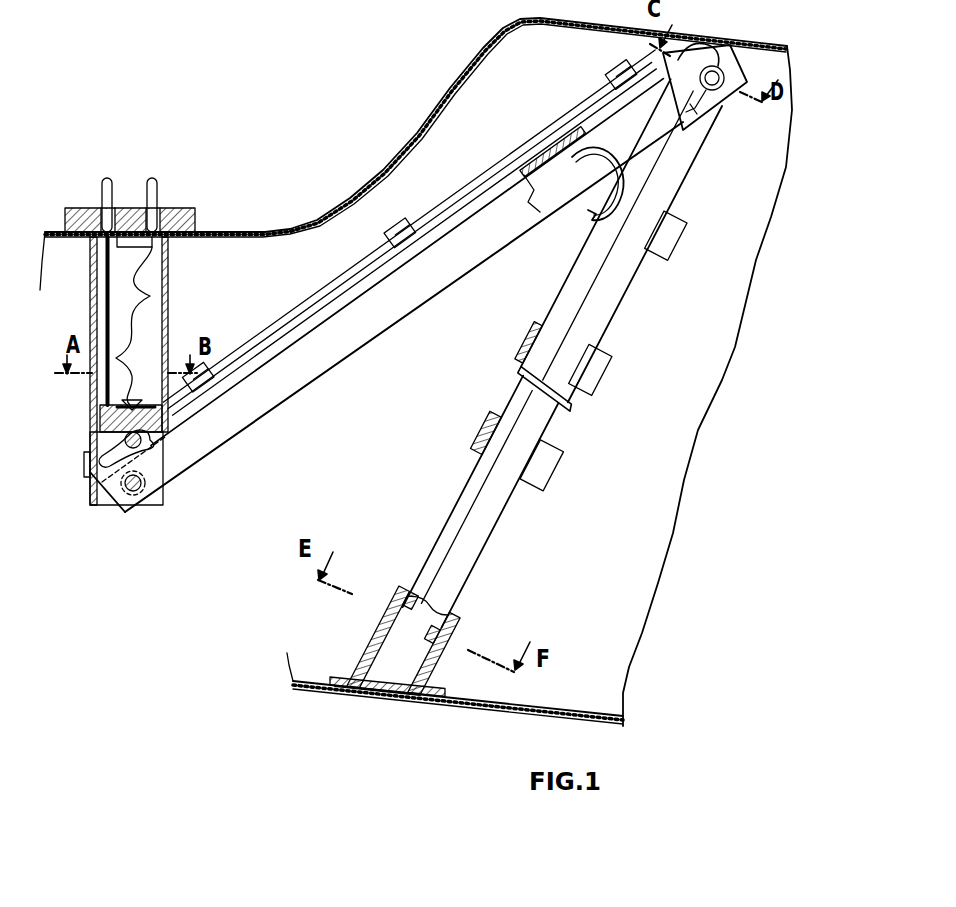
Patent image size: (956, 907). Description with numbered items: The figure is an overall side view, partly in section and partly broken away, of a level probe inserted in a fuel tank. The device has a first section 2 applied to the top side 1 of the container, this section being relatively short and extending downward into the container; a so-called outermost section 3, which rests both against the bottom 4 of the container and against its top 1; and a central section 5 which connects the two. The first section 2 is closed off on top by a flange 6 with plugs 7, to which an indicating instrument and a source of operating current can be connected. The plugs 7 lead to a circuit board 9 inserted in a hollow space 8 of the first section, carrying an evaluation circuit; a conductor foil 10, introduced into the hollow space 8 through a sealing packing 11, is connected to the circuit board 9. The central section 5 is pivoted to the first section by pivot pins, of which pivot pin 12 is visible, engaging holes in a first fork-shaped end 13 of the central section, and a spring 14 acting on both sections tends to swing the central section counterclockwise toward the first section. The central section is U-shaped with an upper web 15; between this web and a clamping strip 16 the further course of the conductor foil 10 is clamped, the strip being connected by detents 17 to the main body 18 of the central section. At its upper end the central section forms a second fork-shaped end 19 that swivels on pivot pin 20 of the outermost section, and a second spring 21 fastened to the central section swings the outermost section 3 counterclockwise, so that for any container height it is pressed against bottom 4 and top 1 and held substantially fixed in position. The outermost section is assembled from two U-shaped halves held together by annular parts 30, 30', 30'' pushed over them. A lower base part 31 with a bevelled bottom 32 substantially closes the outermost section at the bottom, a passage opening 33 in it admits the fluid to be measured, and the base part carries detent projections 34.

The top side 1 is at (332, 212).
The first section 2 is at (91, 274).
The outermost section 3 is at (650, 264).
The bottom 4 is at (505, 717).
The central section 5 is at (383, 340).
The flange 6 is at (180, 210).
The plugs 7 is at (112, 180).
The hollow space 8 is at (150, 287).
The circuit board 9 is at (135, 352).
The conductor foil 10 is at (150, 318).
The packing 11 is at (160, 456).
The pivot pin 12 is at (147, 505).
The first fork-shaped end 13 is at (188, 456).
The spring 14 is at (90, 474).
The upper web 15 is at (262, 368).
The clamping strip 16 is at (300, 320).
The detents 17 is at (426, 250).
The main body 18 is at (395, 312).
The second fork-shaped end 19 is at (690, 48).
The pivot pin 20 is at (717, 64).
The second spring 21 is at (600, 212).
The annular parts 30 is at (701, 207).
The annular part 30' is at (610, 370).
The annular part 30'' is at (560, 476).
The lower base part 31 is at (365, 656).
The bevelled bottom 32 is at (370, 698).
The passage opening 33 is at (395, 700).
The detent projections 34 is at (388, 606).